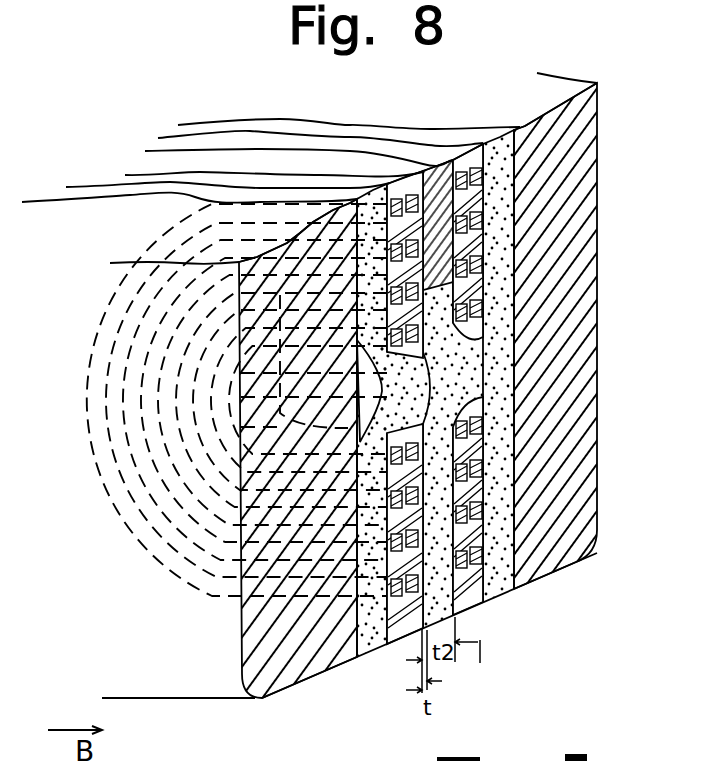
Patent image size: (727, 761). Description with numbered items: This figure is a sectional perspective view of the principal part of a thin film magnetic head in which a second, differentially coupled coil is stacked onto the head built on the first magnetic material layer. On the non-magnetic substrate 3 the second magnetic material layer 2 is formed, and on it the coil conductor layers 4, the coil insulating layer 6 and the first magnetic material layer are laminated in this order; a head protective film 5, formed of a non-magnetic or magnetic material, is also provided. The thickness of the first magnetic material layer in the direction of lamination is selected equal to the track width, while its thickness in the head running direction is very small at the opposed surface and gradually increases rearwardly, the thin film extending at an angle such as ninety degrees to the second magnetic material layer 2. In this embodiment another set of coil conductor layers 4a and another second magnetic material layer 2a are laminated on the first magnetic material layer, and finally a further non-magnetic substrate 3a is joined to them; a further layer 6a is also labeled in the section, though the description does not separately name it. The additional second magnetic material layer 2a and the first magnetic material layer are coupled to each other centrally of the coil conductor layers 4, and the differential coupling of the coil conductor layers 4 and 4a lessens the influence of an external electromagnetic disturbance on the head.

The second magnetic material layer 2 is at (508, 588).
The additional second magnetic material layer 2a is at (359, 660).
The non-magnetic substrate 3 is at (583, 556).
The non-magnetic substrate 3a is at (290, 684).
The coil conductor layers 4 is at (486, 508).
The coil conductor layers 4a is at (470, 437).
The head protective film 5 is at (437, 182).
The coil insulating layer 6 is at (473, 608).
The laminated magnetic film 6a is at (400, 640).